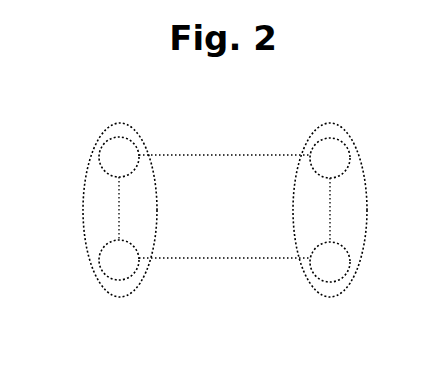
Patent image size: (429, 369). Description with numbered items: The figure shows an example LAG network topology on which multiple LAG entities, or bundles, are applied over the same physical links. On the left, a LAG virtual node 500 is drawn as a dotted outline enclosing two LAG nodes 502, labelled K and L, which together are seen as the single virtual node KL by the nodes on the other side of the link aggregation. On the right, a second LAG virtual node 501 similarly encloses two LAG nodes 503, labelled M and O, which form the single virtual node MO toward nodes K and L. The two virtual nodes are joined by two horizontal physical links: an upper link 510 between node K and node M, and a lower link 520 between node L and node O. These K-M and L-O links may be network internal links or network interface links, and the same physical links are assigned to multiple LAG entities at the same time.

The LAG virtual node 500 is at (92, 210).
The second node group 501 is at (353, 210).
The LAG node 502 is at (100, 172).
The nodes of second group (M, O) 503 is at (352, 164).
The first connection link 510 is at (224, 144).
The second connection link 520 is at (224, 247).